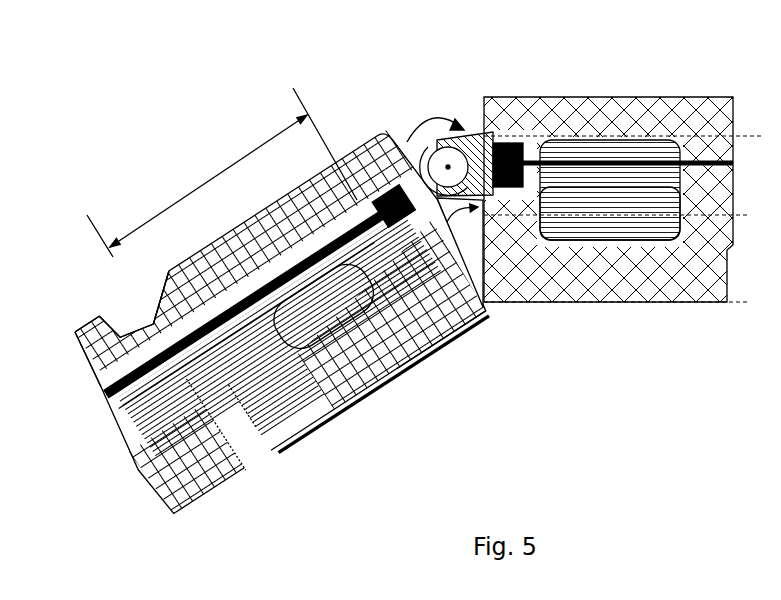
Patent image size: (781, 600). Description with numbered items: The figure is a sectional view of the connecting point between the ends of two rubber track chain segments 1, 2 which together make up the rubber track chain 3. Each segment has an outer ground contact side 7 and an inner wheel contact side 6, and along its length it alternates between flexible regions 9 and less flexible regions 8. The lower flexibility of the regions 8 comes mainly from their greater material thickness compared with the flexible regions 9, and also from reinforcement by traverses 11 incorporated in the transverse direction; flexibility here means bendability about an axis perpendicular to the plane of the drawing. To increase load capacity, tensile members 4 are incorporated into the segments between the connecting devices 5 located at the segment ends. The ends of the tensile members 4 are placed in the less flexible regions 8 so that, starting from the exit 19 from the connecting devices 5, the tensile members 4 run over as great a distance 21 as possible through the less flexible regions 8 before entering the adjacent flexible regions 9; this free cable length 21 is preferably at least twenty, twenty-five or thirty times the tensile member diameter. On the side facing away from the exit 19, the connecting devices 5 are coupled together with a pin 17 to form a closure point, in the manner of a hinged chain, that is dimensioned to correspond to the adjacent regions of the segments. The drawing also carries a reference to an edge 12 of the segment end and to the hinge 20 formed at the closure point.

The rubber track chain segment 1 is at (463, 346).
The rubber track chain segment 2 is at (527, 321).
The rubber track chain 3 is at (162, 440).
The tensile member 4 is at (105, 398).
The connecting device 5 is at (418, 150).
The inner wheel contact side 6 is at (93, 338).
The outer ground contact side 7 is at (430, 347).
The less flexible region 8 is at (383, 386).
The flexible region 9 is at (157, 322).
The traverse 11 is at (327, 307).
The edge 12 is at (154, 322).
The pin 17 is at (448, 167).
The exit 19 is at (382, 197).
The hinge 20 is at (461, 150).
The distance 21 is at (222, 172).